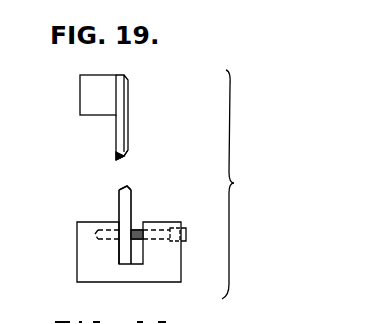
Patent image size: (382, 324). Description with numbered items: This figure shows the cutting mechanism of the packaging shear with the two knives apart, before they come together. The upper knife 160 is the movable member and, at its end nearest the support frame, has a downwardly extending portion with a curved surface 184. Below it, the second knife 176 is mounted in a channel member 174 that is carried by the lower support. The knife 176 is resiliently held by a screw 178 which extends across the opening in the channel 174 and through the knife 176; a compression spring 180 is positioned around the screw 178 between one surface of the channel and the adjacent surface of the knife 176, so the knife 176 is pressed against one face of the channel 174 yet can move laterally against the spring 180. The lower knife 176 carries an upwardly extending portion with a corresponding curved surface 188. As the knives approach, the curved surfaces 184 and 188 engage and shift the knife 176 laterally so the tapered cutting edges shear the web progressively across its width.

The knife 160 is at (129, 121).
The curved surface 184 is at (128, 159).
The channel member 174 is at (77, 247).
The second knife 176 is at (133, 207).
The curved surface 188 is at (121, 188).
The compression spring 180 is at (141, 227).
The screw 178 is at (187, 233).